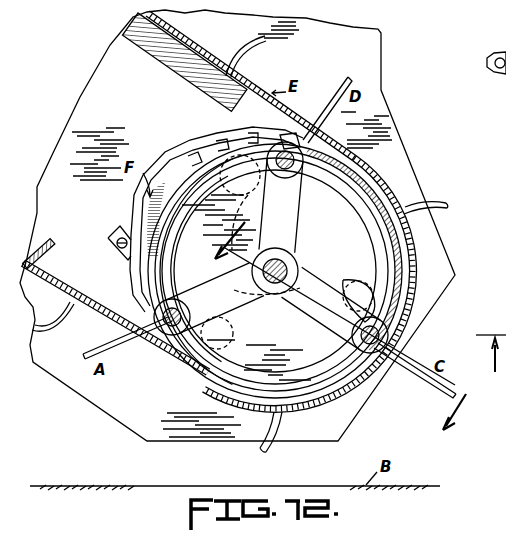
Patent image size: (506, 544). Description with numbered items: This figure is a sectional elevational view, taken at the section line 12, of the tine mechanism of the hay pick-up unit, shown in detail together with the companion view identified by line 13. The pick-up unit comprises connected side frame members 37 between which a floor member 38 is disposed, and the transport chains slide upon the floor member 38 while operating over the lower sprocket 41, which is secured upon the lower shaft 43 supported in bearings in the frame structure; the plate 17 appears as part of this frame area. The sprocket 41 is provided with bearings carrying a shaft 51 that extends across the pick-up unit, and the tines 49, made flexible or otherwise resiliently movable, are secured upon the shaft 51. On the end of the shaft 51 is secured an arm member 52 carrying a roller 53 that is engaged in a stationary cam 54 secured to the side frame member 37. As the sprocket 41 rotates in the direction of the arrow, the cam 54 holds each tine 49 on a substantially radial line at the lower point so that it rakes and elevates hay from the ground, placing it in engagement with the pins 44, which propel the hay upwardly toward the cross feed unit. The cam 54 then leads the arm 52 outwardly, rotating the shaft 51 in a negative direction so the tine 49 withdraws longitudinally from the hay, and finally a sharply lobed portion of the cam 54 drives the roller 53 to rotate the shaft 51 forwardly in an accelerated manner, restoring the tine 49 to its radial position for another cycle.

The section line 12 is at (490, 346).
The section line of companion view 13 is at (345, 326).
The supporting plate 17 is at (381, 62).
The side frame member 37 is at (396, 150).
The floor member 38 is at (200, 85).
The lower sprocket 41 is at (138, 264).
The lower shaft 43 is at (287, 266).
The pin 44 is at (238, 55).
The tine 49 is at (86, 366).
The shaft 51 is at (303, 148).
The arm member 52 is at (396, 305).
The roller 53 is at (396, 274).
The stationary cam 54 is at (345, 226).